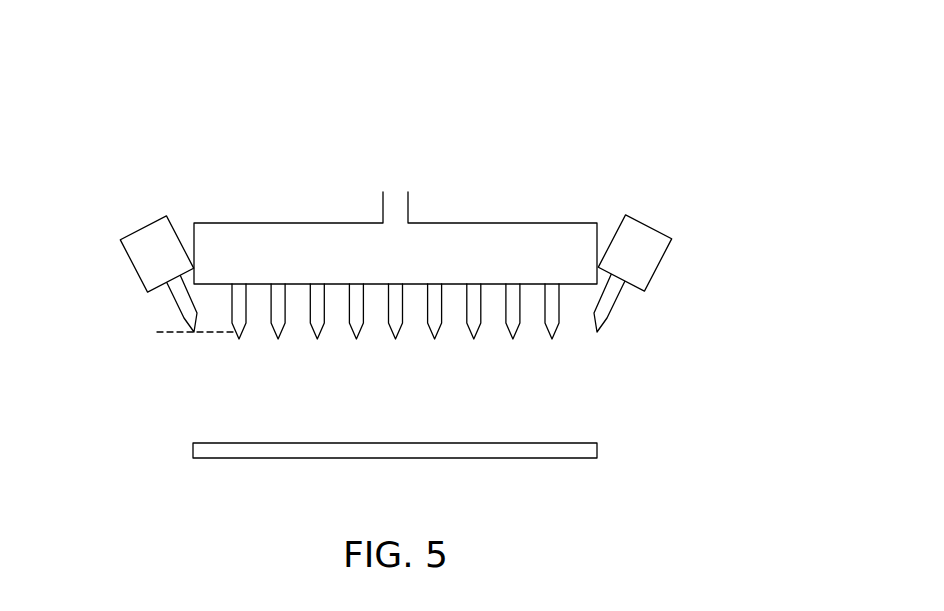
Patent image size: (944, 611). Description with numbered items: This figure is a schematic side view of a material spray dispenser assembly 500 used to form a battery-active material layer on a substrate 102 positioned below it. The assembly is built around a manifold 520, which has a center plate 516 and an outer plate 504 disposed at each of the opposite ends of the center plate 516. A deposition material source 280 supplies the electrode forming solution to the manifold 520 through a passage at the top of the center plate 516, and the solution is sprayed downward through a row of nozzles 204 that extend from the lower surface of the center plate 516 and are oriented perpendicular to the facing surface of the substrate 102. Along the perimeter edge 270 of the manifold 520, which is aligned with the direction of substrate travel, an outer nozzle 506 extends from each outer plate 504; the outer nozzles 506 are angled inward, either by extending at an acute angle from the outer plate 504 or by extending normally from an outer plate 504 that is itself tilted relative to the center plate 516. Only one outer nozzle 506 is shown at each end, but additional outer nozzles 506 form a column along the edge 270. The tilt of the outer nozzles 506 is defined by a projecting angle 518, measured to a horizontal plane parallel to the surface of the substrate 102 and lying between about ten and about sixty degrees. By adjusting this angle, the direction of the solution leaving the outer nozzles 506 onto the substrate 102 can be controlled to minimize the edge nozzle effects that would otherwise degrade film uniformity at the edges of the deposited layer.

The material spray dispenser assembly 500 is at (597, 80).
The center plate 516 is at (522, 190).
The manifold 520 is at (562, 223).
The deposition material source 280 is at (396, 186).
The nozzles 204 is at (246, 308).
The outer nozzles 506 is at (172, 295).
The outer plate 504 is at (174, 261).
The perimeter edge 270 is at (126, 251).
The projecting angle 518 is at (174, 320).
The substrate 102 is at (253, 458).